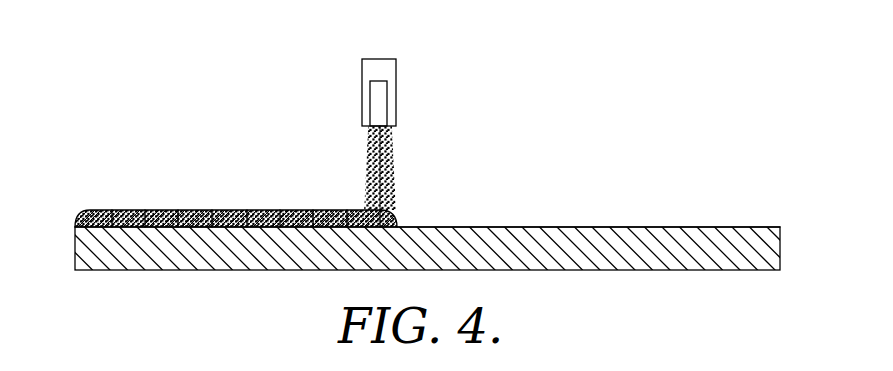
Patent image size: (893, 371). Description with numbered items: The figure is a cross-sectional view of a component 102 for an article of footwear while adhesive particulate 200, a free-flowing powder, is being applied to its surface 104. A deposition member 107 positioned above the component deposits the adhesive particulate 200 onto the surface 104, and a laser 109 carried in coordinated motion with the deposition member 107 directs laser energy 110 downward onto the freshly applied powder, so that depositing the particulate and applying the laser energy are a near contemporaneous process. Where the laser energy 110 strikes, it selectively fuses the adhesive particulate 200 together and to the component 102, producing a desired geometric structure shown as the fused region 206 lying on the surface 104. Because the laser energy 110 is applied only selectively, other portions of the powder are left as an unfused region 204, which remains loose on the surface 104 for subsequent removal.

The component 102 is at (208, 258).
The surface 104 is at (558, 222).
The deposition member 107 is at (385, 52).
The laser 109 is at (389, 99).
The laser energy 110 is at (375, 187).
The adhesive particulate 200 is at (403, 148).
The unfused region 204 is at (126, 204).
The fused region 206 is at (188, 204).